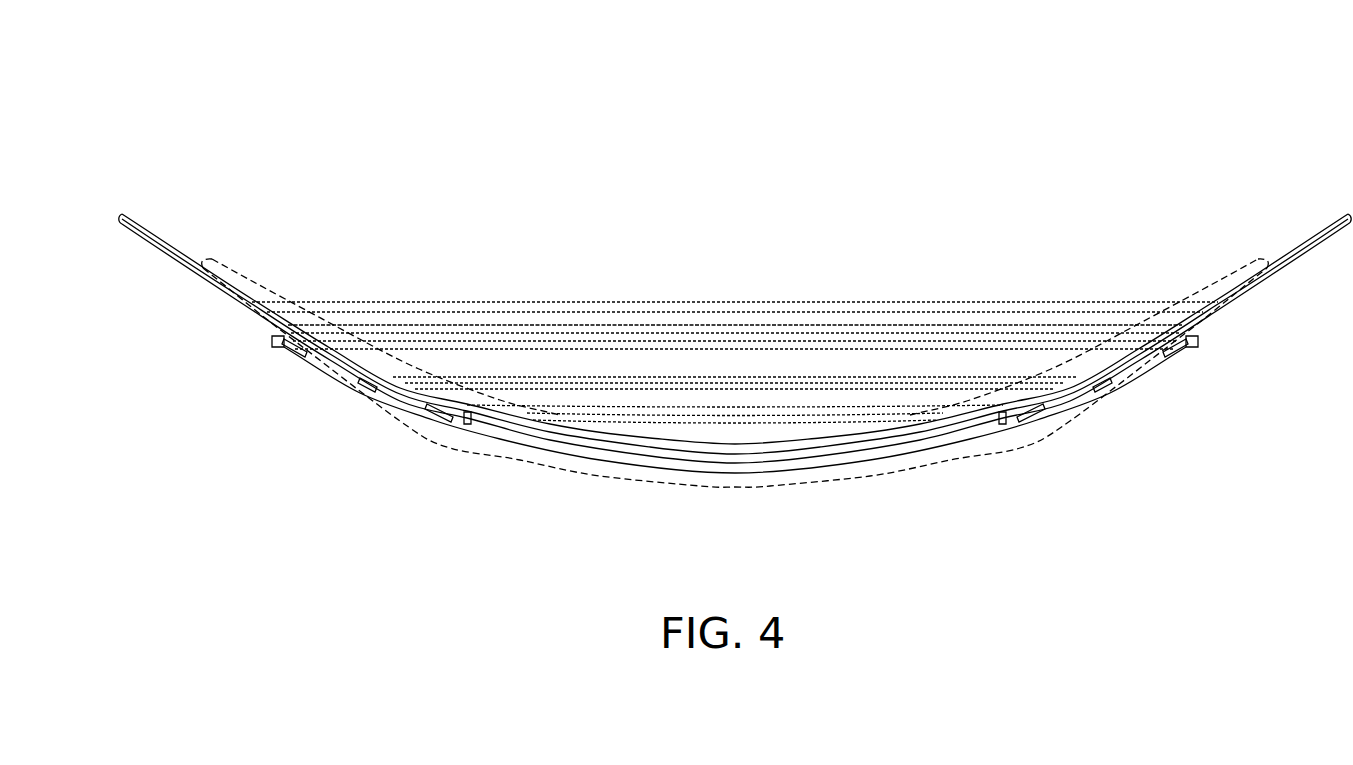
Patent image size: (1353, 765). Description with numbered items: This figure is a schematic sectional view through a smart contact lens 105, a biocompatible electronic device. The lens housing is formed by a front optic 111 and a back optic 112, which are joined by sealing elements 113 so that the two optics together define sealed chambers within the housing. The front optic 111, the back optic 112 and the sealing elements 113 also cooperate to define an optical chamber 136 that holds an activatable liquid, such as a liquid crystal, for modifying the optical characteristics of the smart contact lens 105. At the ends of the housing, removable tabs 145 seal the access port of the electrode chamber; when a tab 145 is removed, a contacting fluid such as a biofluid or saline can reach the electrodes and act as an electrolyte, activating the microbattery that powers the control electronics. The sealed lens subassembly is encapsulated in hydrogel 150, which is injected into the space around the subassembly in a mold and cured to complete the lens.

The smart contact lens 105 is at (972, 146).
The front optic 111 is at (1058, 383).
The back optic 112 is at (1081, 410).
The sealing elements 113 is at (461, 424).
The optical chamber 136 is at (693, 462).
The removable tab 145 is at (155, 222).
The hydrogel 150 is at (913, 478).